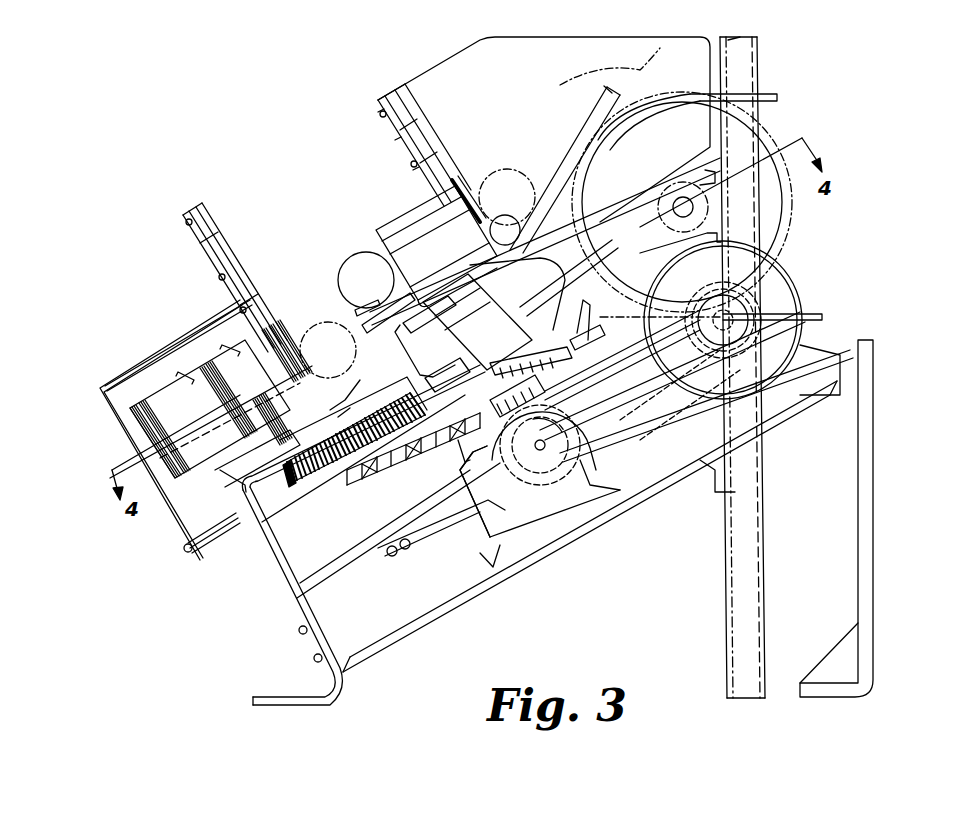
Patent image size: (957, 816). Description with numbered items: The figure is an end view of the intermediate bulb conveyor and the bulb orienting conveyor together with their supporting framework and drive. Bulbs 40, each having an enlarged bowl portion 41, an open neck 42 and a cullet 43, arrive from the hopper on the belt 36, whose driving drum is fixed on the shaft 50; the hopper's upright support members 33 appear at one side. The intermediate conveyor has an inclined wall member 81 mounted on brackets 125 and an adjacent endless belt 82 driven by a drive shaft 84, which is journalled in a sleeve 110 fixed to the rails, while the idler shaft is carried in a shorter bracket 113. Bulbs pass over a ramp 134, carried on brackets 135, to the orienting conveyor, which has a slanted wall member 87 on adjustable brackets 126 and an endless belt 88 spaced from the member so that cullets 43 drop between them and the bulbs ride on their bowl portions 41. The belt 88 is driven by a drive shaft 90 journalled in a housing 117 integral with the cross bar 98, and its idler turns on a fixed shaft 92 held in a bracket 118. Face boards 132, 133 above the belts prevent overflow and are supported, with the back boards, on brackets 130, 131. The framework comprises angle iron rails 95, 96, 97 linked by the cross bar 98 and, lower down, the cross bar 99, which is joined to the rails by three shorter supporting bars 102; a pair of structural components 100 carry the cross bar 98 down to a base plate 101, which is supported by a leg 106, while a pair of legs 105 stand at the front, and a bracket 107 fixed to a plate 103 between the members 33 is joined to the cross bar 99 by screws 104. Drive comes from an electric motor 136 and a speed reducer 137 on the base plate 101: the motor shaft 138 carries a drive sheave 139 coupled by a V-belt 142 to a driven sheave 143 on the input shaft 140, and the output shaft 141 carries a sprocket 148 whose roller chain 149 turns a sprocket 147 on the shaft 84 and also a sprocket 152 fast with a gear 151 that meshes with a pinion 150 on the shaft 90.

The upright support member 33 is at (766, 460).
The belt 36 is at (772, 95).
The bulb 40 is at (652, 52).
The bowl portion 41 is at (716, 38).
The neck 42 is at (646, 70).
The cullet 43 is at (607, 87).
The shaft 50 is at (753, 135).
The inclined wall member 81 is at (571, 150).
The endless belt 82 is at (462, 187).
The drive shaft 84 is at (420, 196).
The slanted wall member 87 is at (367, 337).
The endless belt 88 is at (278, 335).
The drive shaft 90 is at (228, 347).
The fixed shaft 92 is at (180, 373).
The angle iron rail 95 is at (582, 342).
The angle iron rail 96 is at (455, 380).
The angle iron rail 97 is at (260, 520).
The cross bar 98 is at (240, 486).
The cross bar 99 is at (313, 578).
The structural component 100 is at (312, 608).
The base plate 101 is at (445, 607).
The supporting bar 102 is at (590, 330).
The plate 103 is at (712, 473).
The screw 104 is at (403, 548).
The leg 105 is at (280, 697).
The leg 106 is at (873, 460).
The bracket 107 is at (483, 527).
The sleeve 110 is at (488, 363).
The bracket 113 is at (446, 312).
The housing 117 is at (332, 410).
The bracket 118 is at (217, 471).
The bracket 125 is at (558, 228).
The bracket 126 is at (405, 330).
The bracket 130 is at (398, 135).
The bracket 131 is at (213, 268).
The face board 132 is at (420, 108).
The face board 133 is at (218, 225).
The ramp 134 is at (400, 305).
The bracket 135 is at (573, 247).
The electric motor 136 is at (793, 278).
The speed reducer 137 is at (537, 527).
The shaft 138 is at (733, 328).
The drive sheave 139 is at (697, 347).
The input shaft 140 is at (542, 452).
The output shaft 141 is at (493, 442).
The V-belt 142 is at (683, 405).
The driven sheave 143 is at (642, 375).
The sprocket 147 is at (540, 363).
The sprocket 148 is at (513, 403).
The roller chain 149 is at (427, 447).
The pinion 150 is at (293, 482).
The gear 151 is at (353, 402).
The sprocket 152 is at (360, 457).